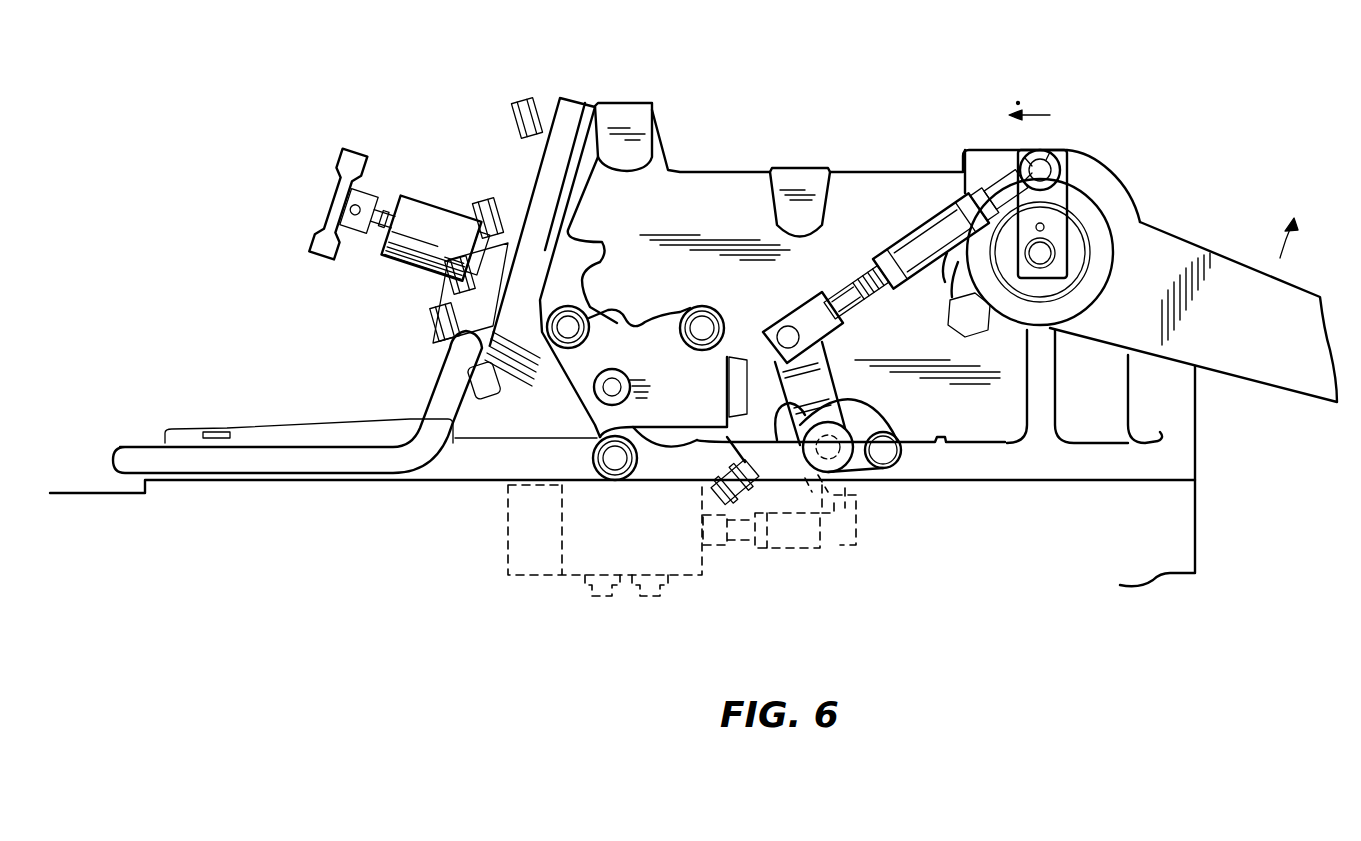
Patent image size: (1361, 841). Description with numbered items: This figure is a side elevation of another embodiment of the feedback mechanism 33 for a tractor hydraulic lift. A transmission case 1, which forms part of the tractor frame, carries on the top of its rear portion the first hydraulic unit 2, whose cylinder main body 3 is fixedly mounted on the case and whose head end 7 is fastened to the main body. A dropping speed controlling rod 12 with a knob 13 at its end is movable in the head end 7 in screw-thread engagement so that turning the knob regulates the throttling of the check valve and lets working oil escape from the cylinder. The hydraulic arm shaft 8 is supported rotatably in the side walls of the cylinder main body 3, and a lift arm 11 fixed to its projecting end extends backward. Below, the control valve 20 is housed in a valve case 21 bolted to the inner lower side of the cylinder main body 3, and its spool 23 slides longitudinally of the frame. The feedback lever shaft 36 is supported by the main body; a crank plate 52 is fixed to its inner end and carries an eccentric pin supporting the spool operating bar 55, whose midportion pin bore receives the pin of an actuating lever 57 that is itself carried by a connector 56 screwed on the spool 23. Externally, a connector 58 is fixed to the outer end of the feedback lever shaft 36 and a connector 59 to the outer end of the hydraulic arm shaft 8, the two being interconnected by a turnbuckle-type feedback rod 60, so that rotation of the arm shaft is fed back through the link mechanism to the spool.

The transmission case 1 is at (1195, 505).
The first hydraulic unit 2 is at (783, 166).
The cylinder main body 3 is at (895, 190).
The head end 7 is at (530, 190).
The hydraulic arm shaft 8 is at (1045, 283).
The lift arm 11 is at (1288, 366).
The dropping speed controlling rod 12 is at (387, 213).
The knob 13 is at (323, 250).
The control valve 20 is at (686, 588).
The valve case 21 is at (700, 580).
The spool 23 is at (748, 540).
The feedback mechanism 33 is at (858, 268).
The feedback lever shaft 36 is at (825, 440).
The crank plate 52 is at (812, 487).
The spool operating bar 55 is at (838, 500).
The connector 56 is at (830, 550).
The actuating lever 57 is at (840, 508).
The connector 58 is at (810, 393).
The connector 59 is at (1062, 218).
The feedback rod 60 is at (940, 226).